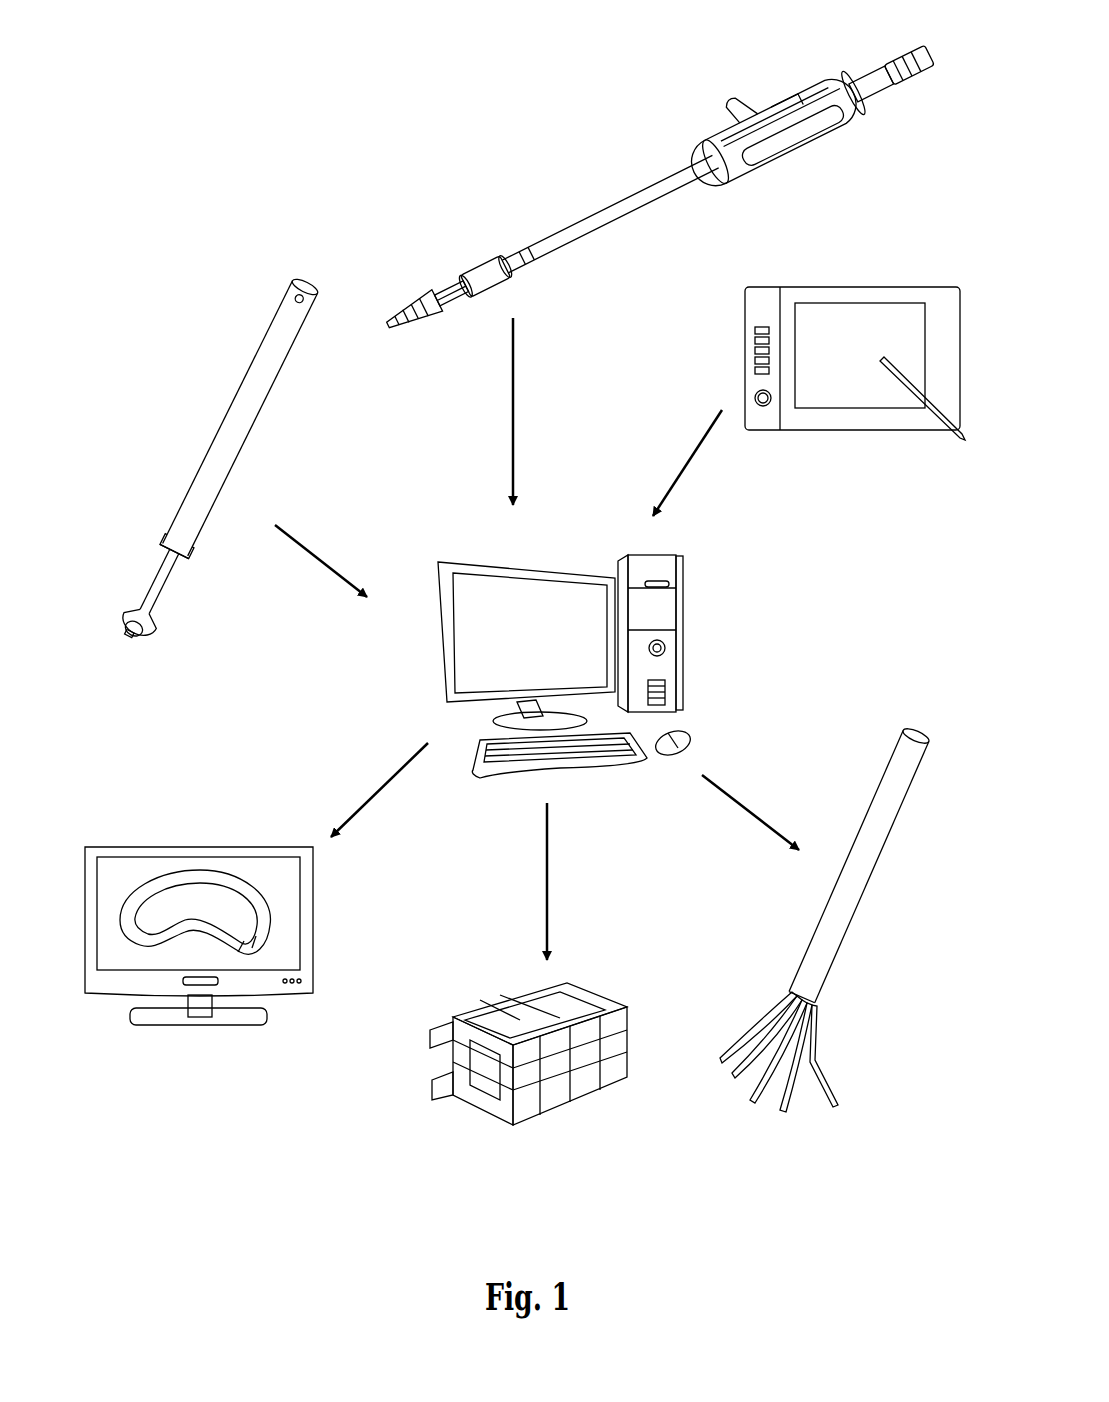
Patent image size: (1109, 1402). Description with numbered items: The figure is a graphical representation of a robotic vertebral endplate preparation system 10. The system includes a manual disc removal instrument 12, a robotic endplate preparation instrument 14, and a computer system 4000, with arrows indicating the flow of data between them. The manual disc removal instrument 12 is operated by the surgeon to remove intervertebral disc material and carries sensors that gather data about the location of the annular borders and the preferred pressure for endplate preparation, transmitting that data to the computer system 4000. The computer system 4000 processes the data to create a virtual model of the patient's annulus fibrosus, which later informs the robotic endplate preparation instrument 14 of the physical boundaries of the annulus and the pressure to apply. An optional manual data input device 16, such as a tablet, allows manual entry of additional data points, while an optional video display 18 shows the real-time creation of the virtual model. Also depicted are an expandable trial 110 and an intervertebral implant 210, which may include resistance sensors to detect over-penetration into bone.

The robotic vertebral endplate preparation system 10 is at (291, 100).
The manual disc removal instrument 12 is at (263, 338).
The robotic endplate preparation instrument 14 is at (878, 857).
The manual data input device 16 is at (915, 287).
The video display 18 is at (105, 847).
The expandable trial 110 is at (657, 182).
The intervertebral implant 210 is at (553, 1102).
The computer system 4000 is at (690, 558).